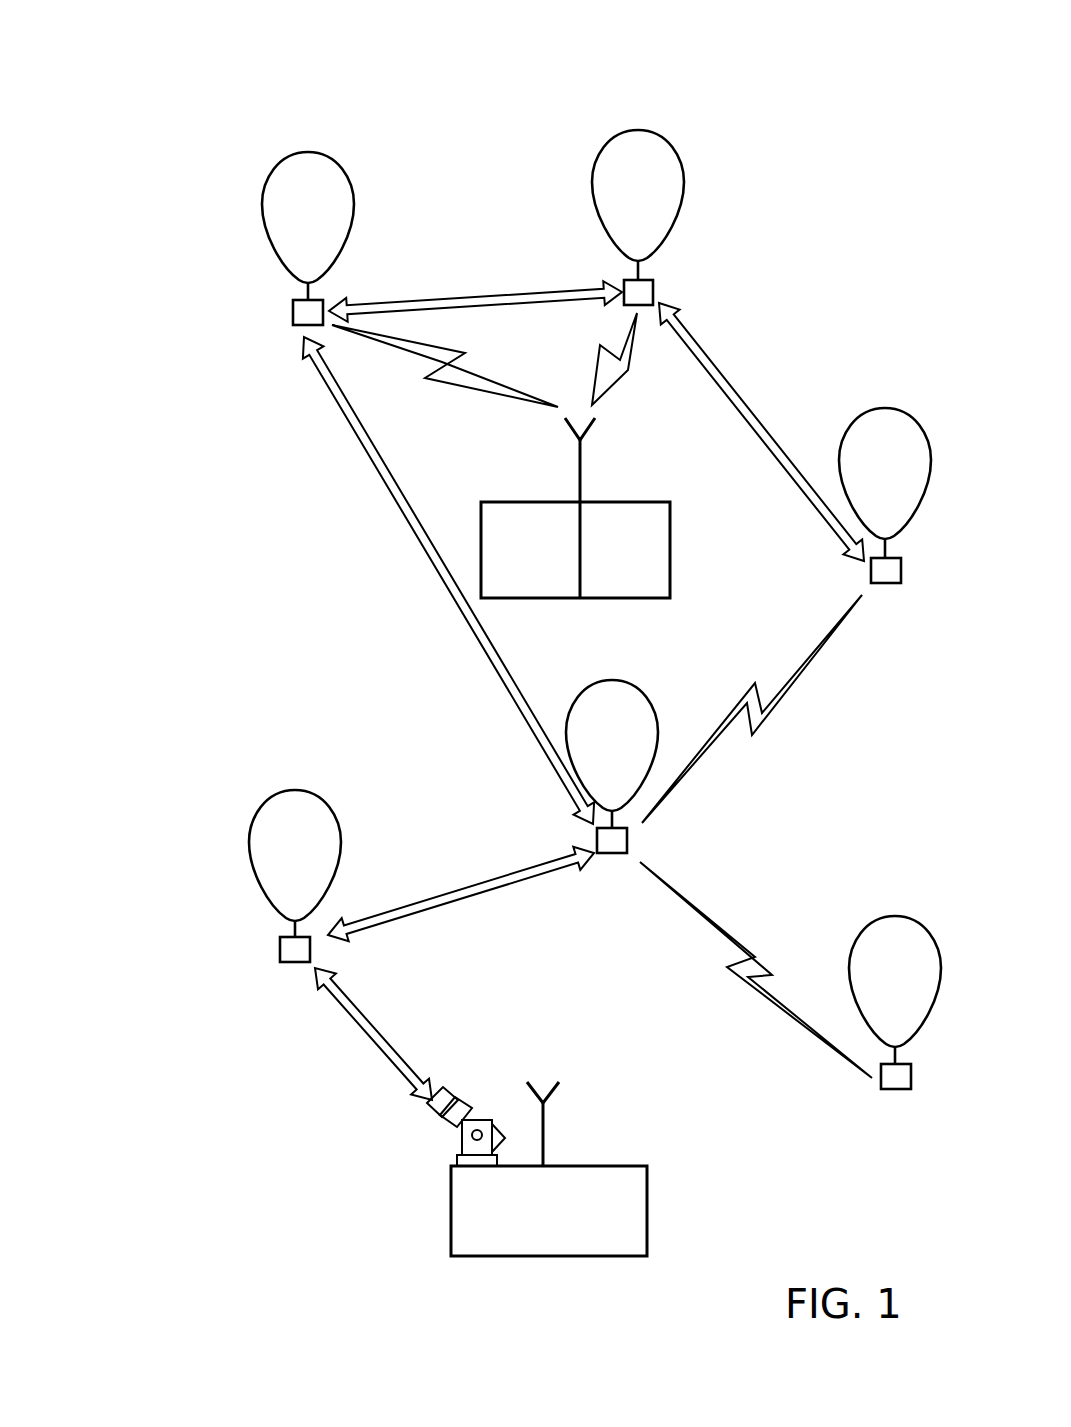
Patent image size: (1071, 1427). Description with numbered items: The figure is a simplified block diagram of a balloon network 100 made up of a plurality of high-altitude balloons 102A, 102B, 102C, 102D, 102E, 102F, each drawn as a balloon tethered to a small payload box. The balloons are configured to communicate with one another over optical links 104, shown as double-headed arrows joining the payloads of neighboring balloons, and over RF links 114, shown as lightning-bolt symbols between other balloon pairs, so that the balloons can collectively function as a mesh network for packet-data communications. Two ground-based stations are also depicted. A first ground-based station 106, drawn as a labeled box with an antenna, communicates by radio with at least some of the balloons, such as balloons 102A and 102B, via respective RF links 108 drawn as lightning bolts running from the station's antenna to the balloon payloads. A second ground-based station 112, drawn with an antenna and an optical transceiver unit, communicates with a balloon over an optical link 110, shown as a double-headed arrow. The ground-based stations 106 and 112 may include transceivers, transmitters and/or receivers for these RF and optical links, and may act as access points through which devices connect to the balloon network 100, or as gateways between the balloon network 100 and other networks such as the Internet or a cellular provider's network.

The balloon network 100 is at (125, 75).
The high-altitude balloon 102A is at (310, 151).
The high-altitude balloon 102B is at (638, 129).
The high-altitude balloon 102C is at (612, 679).
The high-altitude balloon 102D is at (895, 915).
The high-altitude balloon 102E is at (885, 407).
The high-altitude balloon 102F is at (295, 789).
The optical link 104 is at (461, 297).
The ground-based station 106 is at (556, 585).
The RF link 108 is at (452, 357).
The optical link 110 is at (371, 1012).
The ground-based station 112 is at (530, 1249).
The RF link 114 is at (801, 671).